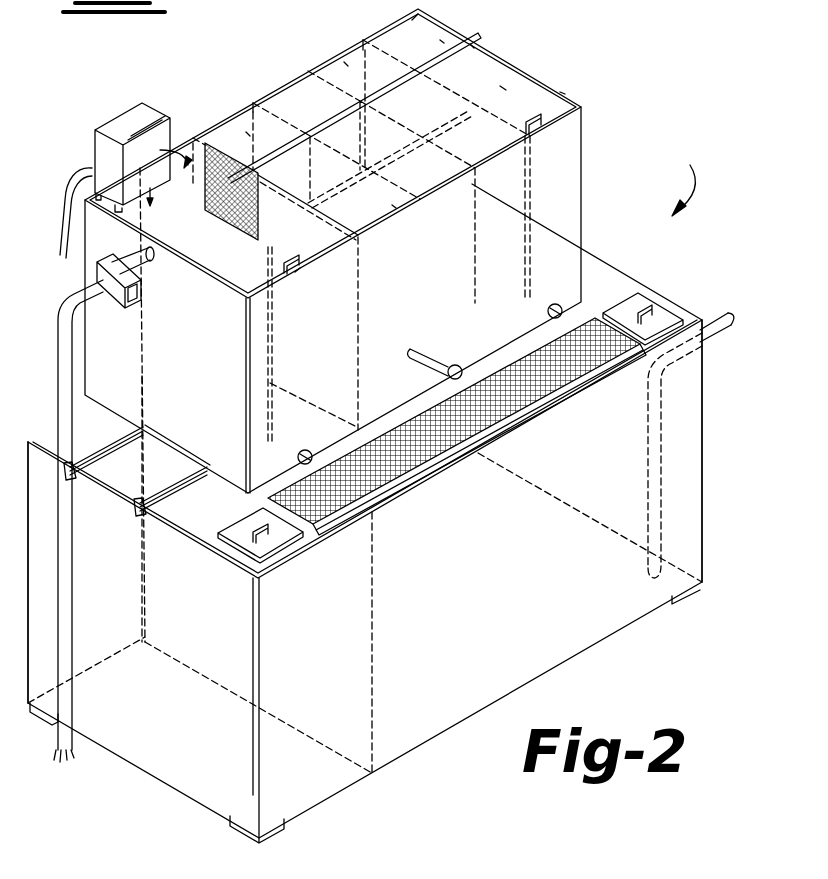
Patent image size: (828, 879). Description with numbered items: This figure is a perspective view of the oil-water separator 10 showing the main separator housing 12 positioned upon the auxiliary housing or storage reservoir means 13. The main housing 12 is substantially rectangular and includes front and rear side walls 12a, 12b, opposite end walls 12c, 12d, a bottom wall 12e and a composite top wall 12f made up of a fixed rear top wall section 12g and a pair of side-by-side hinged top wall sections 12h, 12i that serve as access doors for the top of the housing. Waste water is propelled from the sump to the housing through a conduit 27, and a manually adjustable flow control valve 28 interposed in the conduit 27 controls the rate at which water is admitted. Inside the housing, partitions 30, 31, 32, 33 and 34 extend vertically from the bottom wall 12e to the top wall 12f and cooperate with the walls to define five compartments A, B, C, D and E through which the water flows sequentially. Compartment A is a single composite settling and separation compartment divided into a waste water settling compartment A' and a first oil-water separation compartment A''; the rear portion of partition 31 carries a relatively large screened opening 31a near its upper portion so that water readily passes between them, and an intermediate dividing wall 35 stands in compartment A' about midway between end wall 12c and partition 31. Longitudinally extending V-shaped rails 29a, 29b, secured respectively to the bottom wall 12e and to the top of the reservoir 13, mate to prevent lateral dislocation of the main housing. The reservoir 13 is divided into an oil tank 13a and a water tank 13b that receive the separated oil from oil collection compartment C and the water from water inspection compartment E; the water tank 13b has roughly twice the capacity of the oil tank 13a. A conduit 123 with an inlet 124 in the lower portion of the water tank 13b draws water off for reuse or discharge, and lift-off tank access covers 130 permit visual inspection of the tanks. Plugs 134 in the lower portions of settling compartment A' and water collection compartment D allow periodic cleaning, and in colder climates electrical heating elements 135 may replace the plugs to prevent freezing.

The oil-water separator 10 is at (690, 178).
The main separator housing 12 is at (584, 128).
The front side wall 12a is at (570, 220).
The rear side wall 12b is at (300, 100).
The left-hand end wall 12c is at (224, 352).
The right-hand end wall 12d is at (540, 88).
The bottom wall 12e is at (228, 458).
The composite top wall 12f is at (478, 52).
The fixed rear top wall section 12g is at (385, 22).
The hinged top wall section 12h is at (247, 266).
The hinged top wall section 12i is at (438, 182).
The auxiliary housing or storage reservoir means 13 is at (700, 480).
The oil tank 13a is at (190, 752).
The water tank 13b is at (555, 630).
The conduit 27 is at (78, 360).
The manually adjustable flow control valve 28 is at (97, 296).
The V-shaped rail 29a is at (178, 470).
The V-shaped rail 29b is at (125, 445).
The partition 30 is at (340, 135).
The partition 31 is at (330, 284).
The filter or screened opening 31a is at (255, 150).
The partition 32 is at (358, 200).
The partition 33 is at (505, 170).
The partition 34 is at (500, 85).
The intermediate partition or dividing wall 35 is at (262, 322).
The conduit 123 is at (648, 428).
The inlet 124 is at (654, 578).
The tank access cover 130 is at (660, 315).
The plug 134 is at (308, 450).
The electrical heating element 135 is at (430, 348).
The composite water settling and separation compartment A is at (126, 180).
The waste water settling compartment A' is at (301, 286).
The first oil-water separation compartment A'' is at (241, 113).
The compartment B is at (396, 205).
The oil collection compartment C is at (345, 65).
The water collection compartment D is at (560, 94).
The water inspection compartment E is at (440, 42).